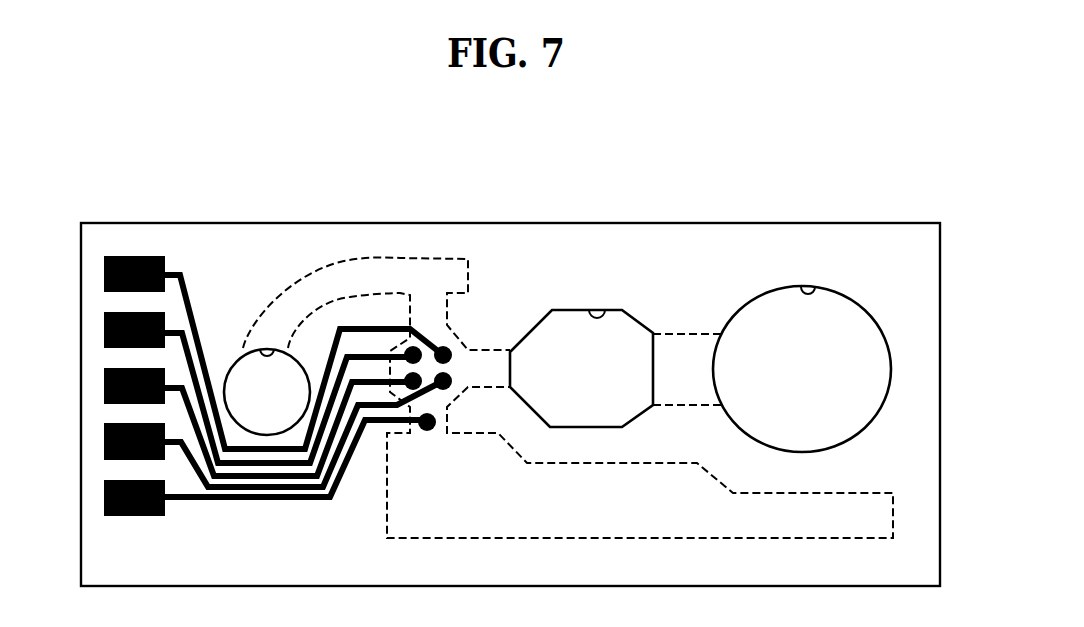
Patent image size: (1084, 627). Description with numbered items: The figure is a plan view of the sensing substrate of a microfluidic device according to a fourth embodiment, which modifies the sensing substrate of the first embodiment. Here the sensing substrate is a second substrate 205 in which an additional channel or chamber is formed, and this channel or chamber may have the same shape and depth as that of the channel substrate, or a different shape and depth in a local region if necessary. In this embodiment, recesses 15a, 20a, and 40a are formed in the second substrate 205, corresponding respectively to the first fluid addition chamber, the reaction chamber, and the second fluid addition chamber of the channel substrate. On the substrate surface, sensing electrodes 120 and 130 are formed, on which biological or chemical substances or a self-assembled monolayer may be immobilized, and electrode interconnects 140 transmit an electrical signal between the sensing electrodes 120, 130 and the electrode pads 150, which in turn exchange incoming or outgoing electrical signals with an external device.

The second substrate 205 is at (504, 241).
The electrode pads 150 is at (166, 264).
The electrode interconnects 140 is at (266, 500).
The sensing electrode 130 is at (428, 431).
The sensing electrode 120 is at (450, 348).
The recess 40a is at (267, 350).
The recess 20a is at (598, 310).
The recess 15a is at (808, 287).